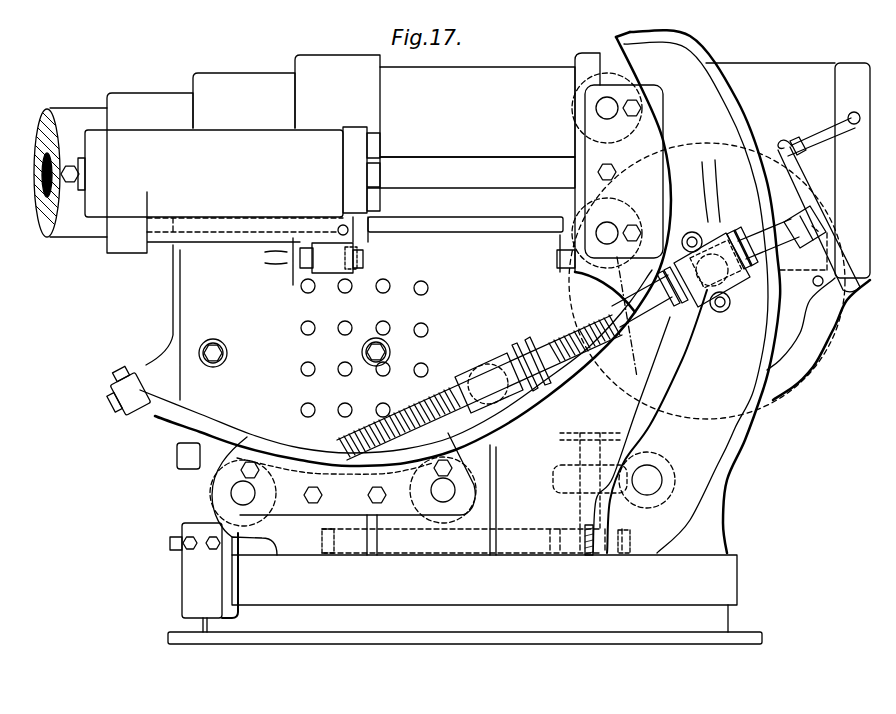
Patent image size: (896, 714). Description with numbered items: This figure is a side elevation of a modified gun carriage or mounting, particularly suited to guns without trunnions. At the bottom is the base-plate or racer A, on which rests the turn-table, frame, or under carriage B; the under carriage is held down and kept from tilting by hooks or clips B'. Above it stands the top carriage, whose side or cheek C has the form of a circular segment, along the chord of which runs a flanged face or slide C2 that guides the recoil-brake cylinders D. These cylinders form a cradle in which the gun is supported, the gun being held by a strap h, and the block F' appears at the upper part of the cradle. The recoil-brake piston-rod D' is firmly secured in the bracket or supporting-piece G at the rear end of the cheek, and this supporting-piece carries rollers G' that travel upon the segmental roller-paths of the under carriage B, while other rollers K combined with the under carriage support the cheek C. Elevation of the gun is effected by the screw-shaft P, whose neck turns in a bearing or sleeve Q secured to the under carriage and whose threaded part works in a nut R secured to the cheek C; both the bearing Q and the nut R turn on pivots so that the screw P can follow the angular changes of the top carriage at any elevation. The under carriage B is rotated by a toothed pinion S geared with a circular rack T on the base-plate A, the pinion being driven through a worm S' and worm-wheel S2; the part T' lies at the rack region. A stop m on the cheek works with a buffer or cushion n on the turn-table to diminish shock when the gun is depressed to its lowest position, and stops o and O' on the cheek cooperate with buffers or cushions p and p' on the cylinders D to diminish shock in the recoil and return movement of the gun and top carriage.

The base-plate or racer A is at (465, 599).
The turn-table, frame, or under carriage B is at (512, 324).
The hooks or clips B' is at (196, 577).
The side or cheek of the top carriage C is at (360, 326).
The flanged face or slide C2 is at (465, 223).
The recoil-brake cylinder D is at (200, 156).
The recoil-brake piston-rod D' is at (471, 172).
The block F' is at (477, 112).
The bracket or supporting-piece G is at (596, 182).
The roller G' is at (617, 170).
The strap h is at (337, 91).
The roller K is at (343, 485).
The stop m is at (124, 400).
The buffer or cushion n is at (176, 450).
The stop o is at (278, 261).
The stop O' is at (545, 266).
The buffer or cushion p is at (331, 341).
The buffer or cushion p' is at (365, 253).
The screw-shaft P is at (681, 279).
The bearing or sleeve Q is at (788, 181).
The nut R is at (479, 387).
The toothed pinion S is at (632, 541).
The worm S' is at (647, 480).
The worm-wheel S2 is at (553, 484).
The circular rack T is at (472, 531).
The tie end T' is at (320, 541).